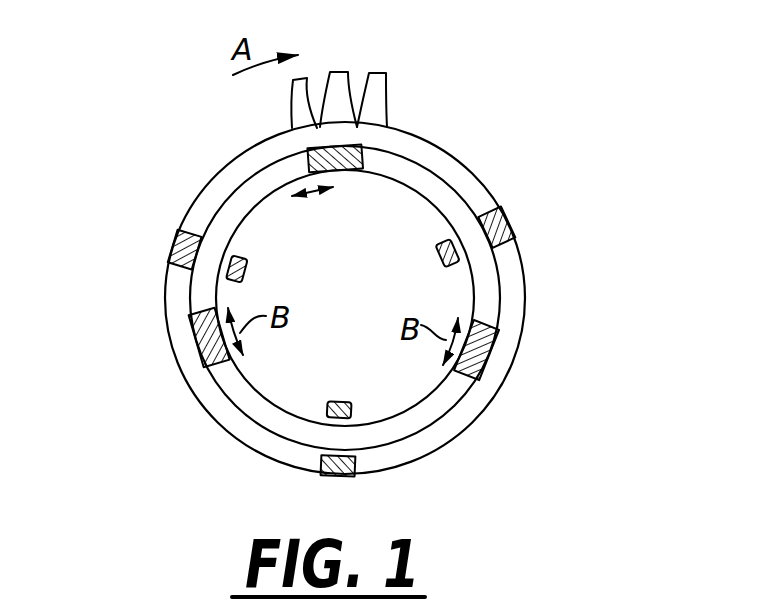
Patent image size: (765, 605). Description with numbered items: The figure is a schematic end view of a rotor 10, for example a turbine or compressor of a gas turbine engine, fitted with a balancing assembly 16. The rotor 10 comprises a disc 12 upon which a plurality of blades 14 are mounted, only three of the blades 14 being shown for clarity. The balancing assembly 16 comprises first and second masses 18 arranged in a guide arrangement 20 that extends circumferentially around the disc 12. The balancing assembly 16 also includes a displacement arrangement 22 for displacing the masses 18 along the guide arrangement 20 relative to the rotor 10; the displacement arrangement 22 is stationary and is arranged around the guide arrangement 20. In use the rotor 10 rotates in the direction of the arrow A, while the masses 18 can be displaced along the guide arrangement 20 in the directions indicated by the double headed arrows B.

The rotor 10 is at (502, 453).
The disc 12 is at (283, 377).
The blades 14 is at (345, 72).
The balancing assembly 16 is at (167, 250).
The masses 18 is at (378, 150).
The guide arrangement 20 is at (440, 170).
The displacement arrangement 22 is at (518, 223).